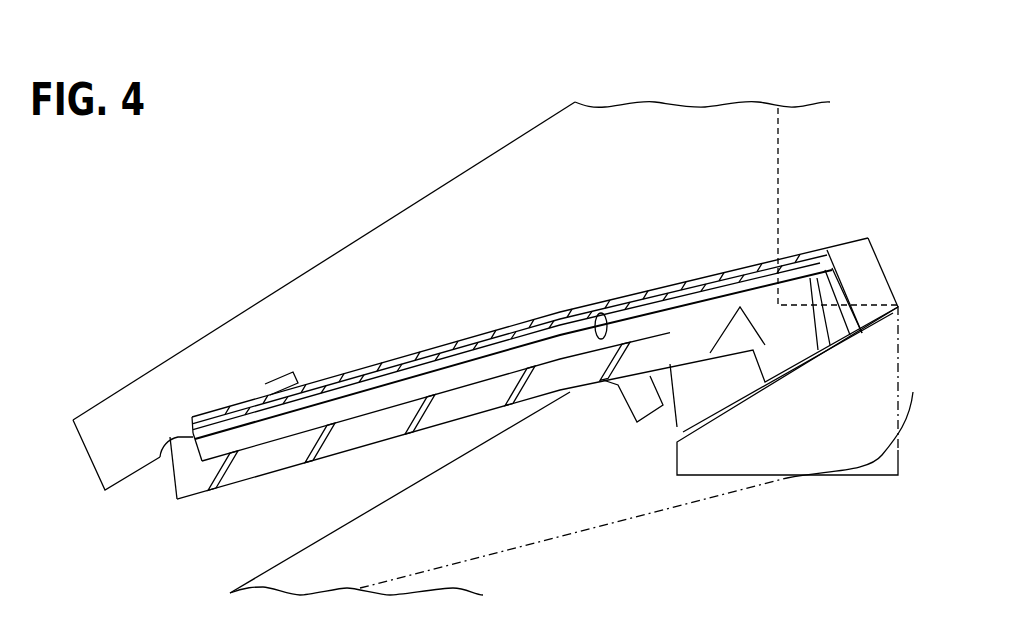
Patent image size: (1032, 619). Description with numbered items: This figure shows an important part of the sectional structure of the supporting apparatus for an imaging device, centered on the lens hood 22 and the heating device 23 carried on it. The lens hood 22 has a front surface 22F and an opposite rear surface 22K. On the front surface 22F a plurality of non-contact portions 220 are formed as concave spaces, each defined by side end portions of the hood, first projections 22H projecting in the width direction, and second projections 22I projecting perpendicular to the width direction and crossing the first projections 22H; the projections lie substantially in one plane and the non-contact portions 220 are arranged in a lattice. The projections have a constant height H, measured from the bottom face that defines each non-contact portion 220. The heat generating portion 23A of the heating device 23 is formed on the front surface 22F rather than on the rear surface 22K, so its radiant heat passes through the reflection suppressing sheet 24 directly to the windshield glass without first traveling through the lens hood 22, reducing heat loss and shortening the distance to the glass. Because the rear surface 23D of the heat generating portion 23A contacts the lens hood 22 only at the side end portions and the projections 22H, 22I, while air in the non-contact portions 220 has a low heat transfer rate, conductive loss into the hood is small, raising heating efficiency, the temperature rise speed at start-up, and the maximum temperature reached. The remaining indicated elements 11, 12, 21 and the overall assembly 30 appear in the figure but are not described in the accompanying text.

The center line 11 is at (778, 166).
The housing wall 12 is at (548, 128).
The base member 21 is at (352, 241).
The lens hood 22 is at (160, 472).
The front surface 22F is at (748, 292).
The first projections 22H is at (345, 410).
The second projections 22I is at (237, 440).
The rear surface 22K is at (728, 360).
The non-contact portions 220 is at (487, 377).
The heating device 23 is at (278, 395).
The heat generating portion 23A is at (280, 392).
The rear surface of heat generating portion 23D is at (412, 384).
The reflection suppressing sheet 24 is at (647, 296).
The connection structure 30 is at (163, 300).
The height H is at (602, 362).